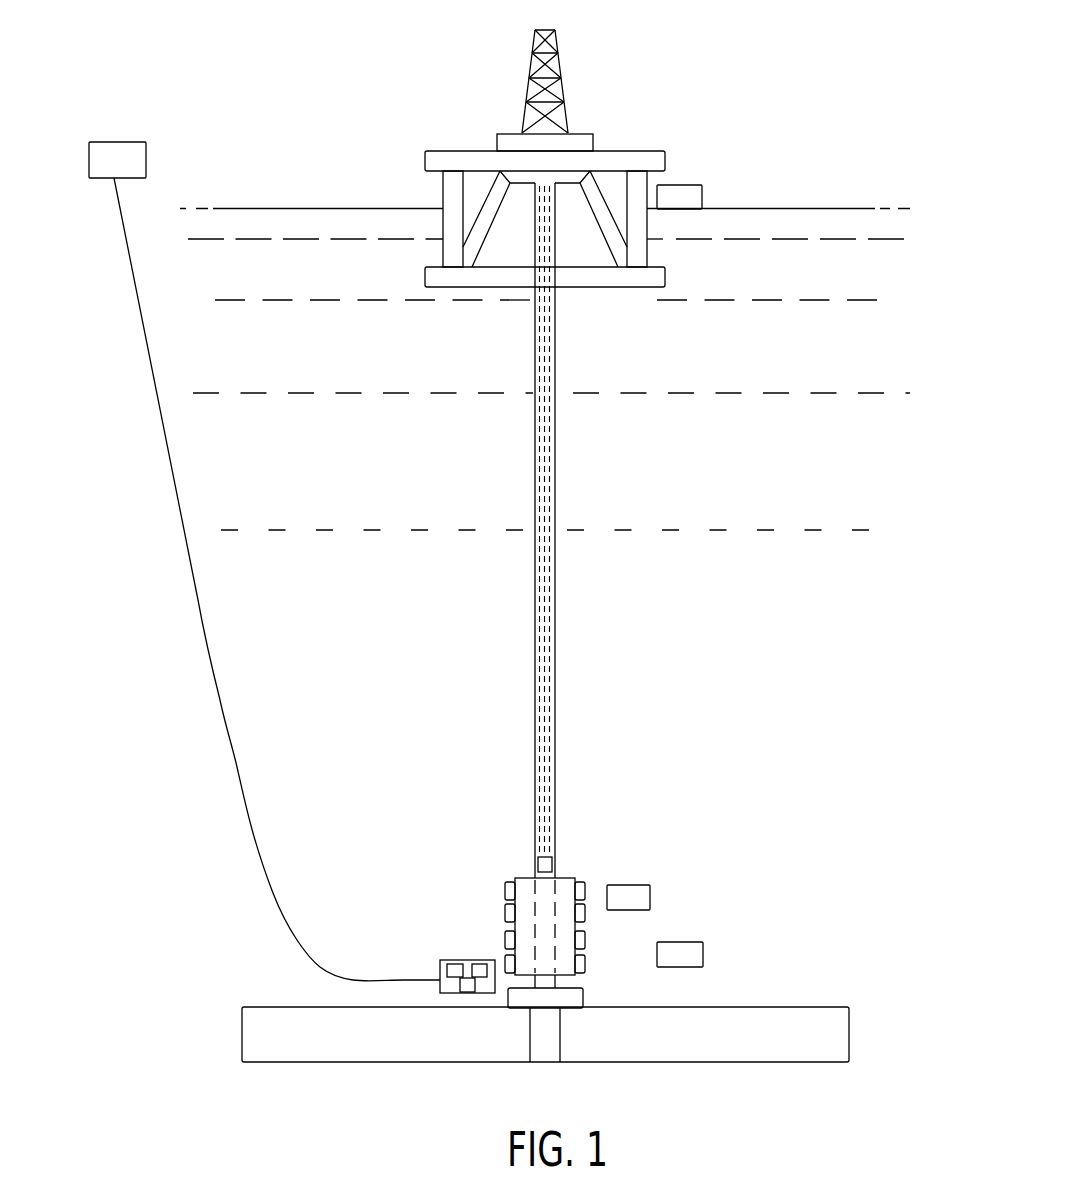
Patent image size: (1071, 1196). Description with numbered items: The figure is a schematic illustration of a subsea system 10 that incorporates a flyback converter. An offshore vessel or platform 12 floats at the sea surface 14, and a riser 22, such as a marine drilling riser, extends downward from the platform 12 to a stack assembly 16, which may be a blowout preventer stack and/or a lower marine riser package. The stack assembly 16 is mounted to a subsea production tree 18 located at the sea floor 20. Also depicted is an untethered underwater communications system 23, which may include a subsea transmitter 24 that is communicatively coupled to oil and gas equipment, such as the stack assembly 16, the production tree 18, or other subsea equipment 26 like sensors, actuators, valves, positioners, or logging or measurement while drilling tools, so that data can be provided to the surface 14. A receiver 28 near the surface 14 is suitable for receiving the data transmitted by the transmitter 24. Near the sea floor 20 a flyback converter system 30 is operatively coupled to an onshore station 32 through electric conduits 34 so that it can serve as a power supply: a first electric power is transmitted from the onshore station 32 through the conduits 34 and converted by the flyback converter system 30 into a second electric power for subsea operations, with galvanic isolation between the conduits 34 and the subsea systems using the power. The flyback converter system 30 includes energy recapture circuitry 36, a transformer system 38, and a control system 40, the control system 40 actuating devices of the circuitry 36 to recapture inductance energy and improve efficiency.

The subsea system 10 is at (758, 62).
The offshore vessel or platform 12 is at (578, 132).
The sea surface 14 is at (775, 208).
The stack assembly 16 is at (495, 924).
The subsea production tree 18 is at (583, 996).
The sea floor 20 is at (762, 1007).
The riser 22 is at (556, 473).
The untethered underwater communications system 23 is at (768, 487).
The subsea transmitter 24 is at (682, 942).
The subsea equipment 26 is at (628, 885).
The receiver 28 is at (678, 185).
The flyback converter system 30 is at (432, 945).
The onshore station 32 is at (119, 142).
The electric conduits 34 is at (205, 640).
The energy recapture circuitry 36 is at (440, 966).
The transformer system 38 is at (480, 961).
The control system 40 is at (467, 993).